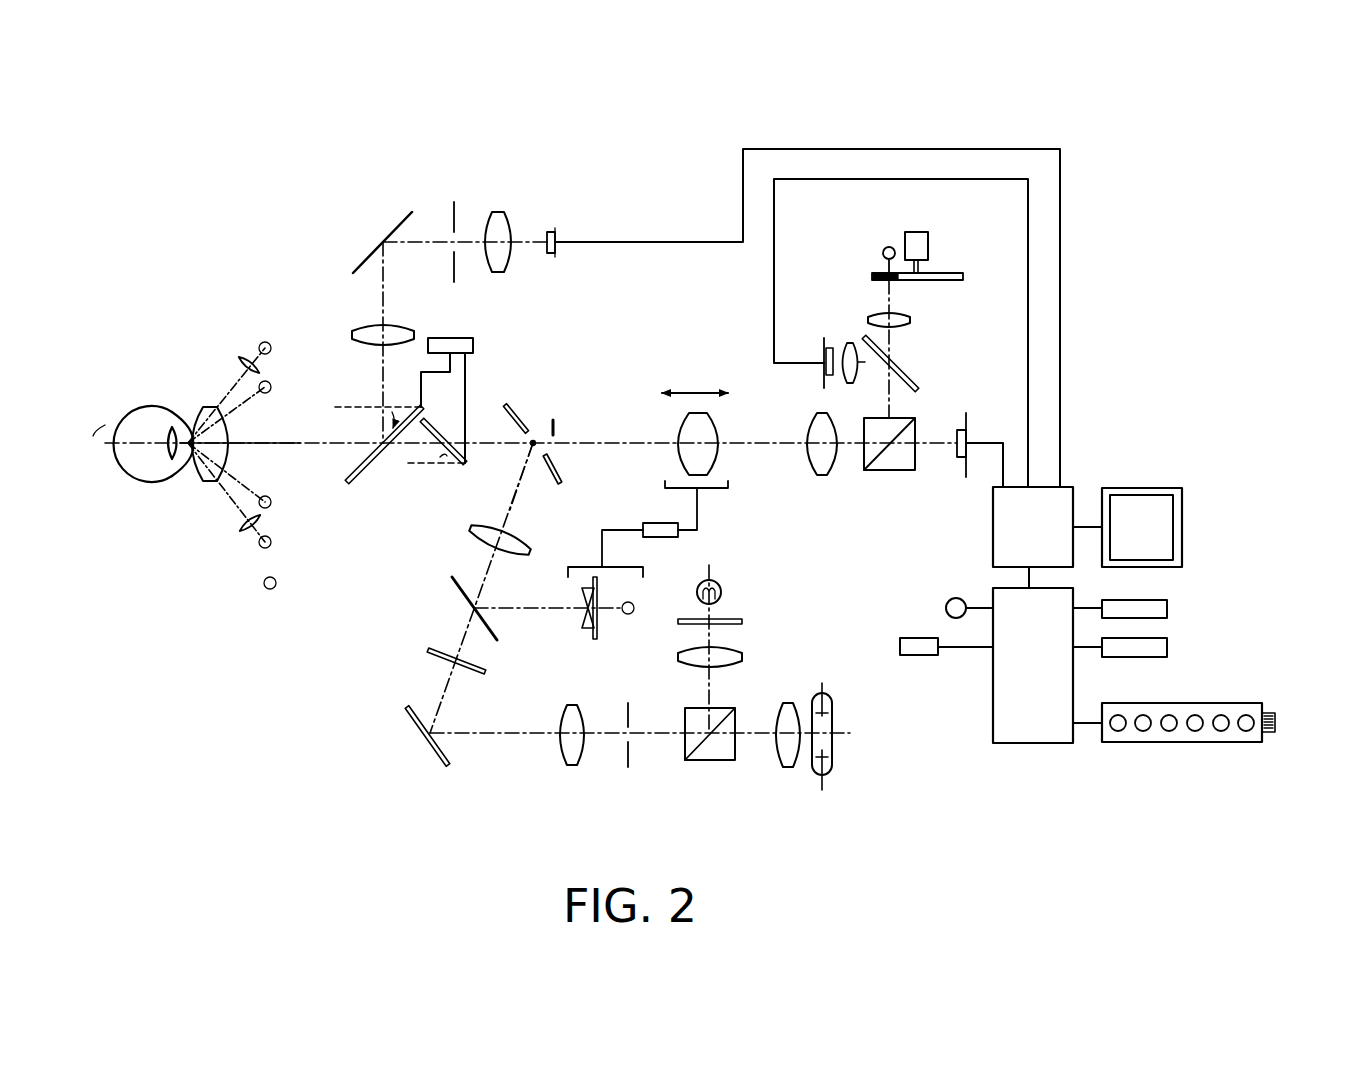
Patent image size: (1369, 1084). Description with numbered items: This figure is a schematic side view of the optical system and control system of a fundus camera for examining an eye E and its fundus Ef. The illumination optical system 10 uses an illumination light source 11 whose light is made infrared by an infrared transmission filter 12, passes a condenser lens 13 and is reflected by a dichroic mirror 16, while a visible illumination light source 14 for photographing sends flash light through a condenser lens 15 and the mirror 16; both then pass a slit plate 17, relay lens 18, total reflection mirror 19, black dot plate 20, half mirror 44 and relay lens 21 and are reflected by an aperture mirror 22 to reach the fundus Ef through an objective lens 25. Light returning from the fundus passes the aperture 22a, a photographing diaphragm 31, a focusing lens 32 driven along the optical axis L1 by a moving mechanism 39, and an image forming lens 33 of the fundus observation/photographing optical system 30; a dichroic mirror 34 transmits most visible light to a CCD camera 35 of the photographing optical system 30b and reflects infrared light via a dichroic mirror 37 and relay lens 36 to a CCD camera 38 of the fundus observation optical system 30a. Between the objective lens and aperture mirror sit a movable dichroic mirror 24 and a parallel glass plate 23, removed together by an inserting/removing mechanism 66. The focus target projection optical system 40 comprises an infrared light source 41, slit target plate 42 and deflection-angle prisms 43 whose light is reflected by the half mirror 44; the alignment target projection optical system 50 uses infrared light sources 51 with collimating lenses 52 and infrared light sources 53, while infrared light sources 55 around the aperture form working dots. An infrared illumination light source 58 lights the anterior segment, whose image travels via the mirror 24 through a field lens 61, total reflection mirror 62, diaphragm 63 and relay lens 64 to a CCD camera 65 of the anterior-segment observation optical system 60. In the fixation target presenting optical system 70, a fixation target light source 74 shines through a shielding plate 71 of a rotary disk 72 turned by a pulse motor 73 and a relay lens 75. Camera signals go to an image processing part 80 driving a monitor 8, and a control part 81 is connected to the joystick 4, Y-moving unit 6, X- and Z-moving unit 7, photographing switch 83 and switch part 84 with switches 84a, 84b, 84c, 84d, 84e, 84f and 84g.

The joystick 4 is at (900, 647).
The Y-moving unit 6 is at (1167, 608).
The X- and Z-moving unit 7 is at (1167, 648).
The monitor 8 is at (1145, 487).
The illumination optical system 10 is at (568, 688).
The illumination light source 11 is at (722, 586).
The infrared transmission filter 12 is at (745, 622).
The condenser lens 13 is at (728, 655).
The visible illumination light source 14 is at (834, 742).
The condenser lens 15 is at (786, 752).
The dichroic mirror 16 is at (718, 750).
The slit plate 17 is at (628, 755).
The relay lens 18 is at (566, 752).
The total reflection mirror 19 is at (415, 722).
The black dot plate 20 is at (432, 656).
The relay lens 21 is at (475, 538).
The aperture mirror 22 is at (517, 410).
The aperture 22a is at (528, 447).
The parallel glass plate 23 is at (446, 456).
The dichroic mirror 24 is at (365, 478).
The objective lens 25 is at (218, 432).
The fundus observation/photographing optical system 30 is at (799, 412).
The fundus observation optical system 30a is at (750, 350).
The photographing optical system 30b is at (930, 463).
The photographing diaphragm 31 is at (556, 420).
The focusing lens 32 is at (684, 420).
The image forming lens 33 is at (812, 428).
The dichroic mirror 34 is at (882, 464).
The CCD camera 35 is at (968, 440).
The relay lens 36 is at (855, 376).
The dichroic mirror 37 is at (918, 388).
The CCD camera 38 is at (829, 346).
The moving mechanism 39 is at (650, 527).
The focus target projection optical system 40 is at (516, 604).
The infrared light source 41 is at (633, 613).
The slit target plate 42 is at (596, 625).
The deflection-angle prisms 43 is at (582, 600).
The half mirror 44 is at (452, 583).
The alignment target projection optical system 50 is at (233, 460).
The infrared light sources 51 is at (265, 342).
The collimating lenses 52 is at (243, 358).
The infrared light sources 53 is at (271, 383).
The infrared light sources 55 is at (535, 440).
The infrared illumination light source 58 is at (268, 589).
The anterior-segment observation optical system 60 is at (447, 358).
The field lens 61 is at (372, 333).
The total reflection mirror 62 is at (403, 218).
The diaphragm 63 is at (455, 208).
The relay lens 64 is at (500, 215).
The CCD camera 65 is at (553, 232).
The inserting/removing mechanism 66 is at (458, 340).
The fixation target presenting optical system 70 is at (961, 333).
The shielding plate 71 is at (880, 273).
The rotary disk 72 is at (963, 276).
The pulse motor 73 is at (929, 239).
The fixation target light source 74 is at (887, 247).
The relay lens 75 is at (878, 313).
The image processing part 80 is at (993, 549).
The control part 81 is at (993, 699).
The photographing switch 83 is at (946, 608).
The switch part 84 is at (1203, 746).
The switch 84a is at (1248, 731).
The switch 84b is at (1222, 731).
The switch 84c is at (1193, 731).
The switch 84d is at (1166, 731).
The switch 84e is at (1141, 731).
The switch 84f is at (1114, 731).
The switch (dial) 84g is at (1275, 722).
The eye E is at (130, 481).
The fundus Ef is at (108, 425).
The optical axis L1 is at (323, 447).